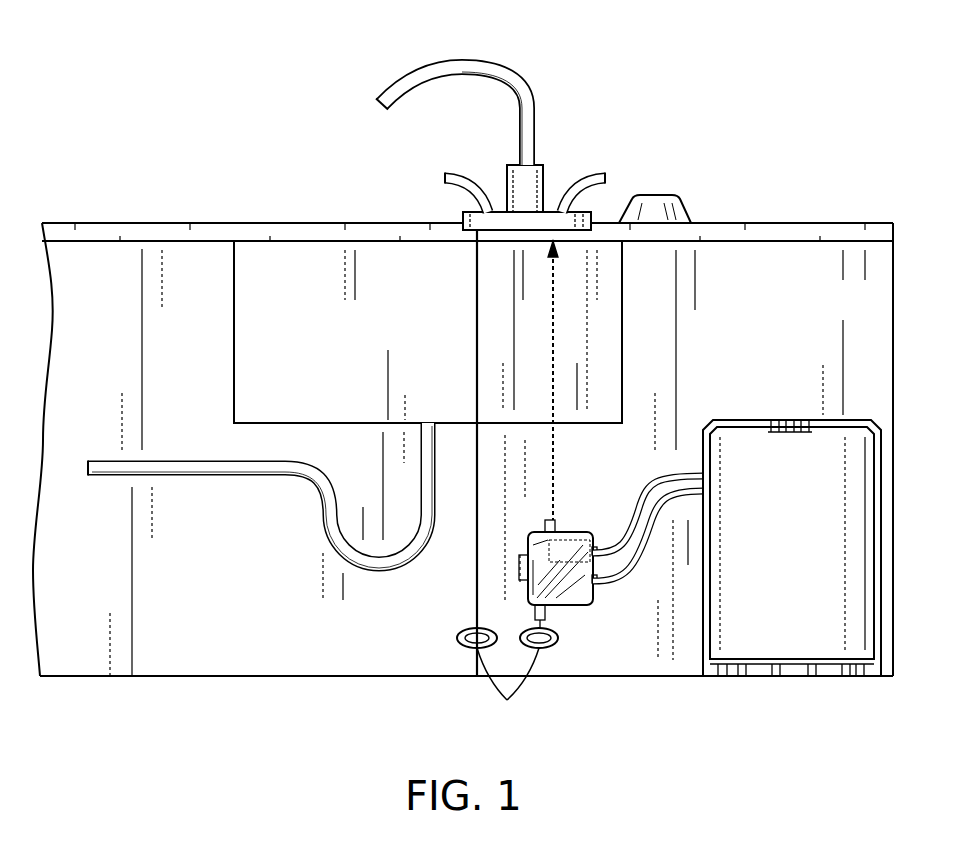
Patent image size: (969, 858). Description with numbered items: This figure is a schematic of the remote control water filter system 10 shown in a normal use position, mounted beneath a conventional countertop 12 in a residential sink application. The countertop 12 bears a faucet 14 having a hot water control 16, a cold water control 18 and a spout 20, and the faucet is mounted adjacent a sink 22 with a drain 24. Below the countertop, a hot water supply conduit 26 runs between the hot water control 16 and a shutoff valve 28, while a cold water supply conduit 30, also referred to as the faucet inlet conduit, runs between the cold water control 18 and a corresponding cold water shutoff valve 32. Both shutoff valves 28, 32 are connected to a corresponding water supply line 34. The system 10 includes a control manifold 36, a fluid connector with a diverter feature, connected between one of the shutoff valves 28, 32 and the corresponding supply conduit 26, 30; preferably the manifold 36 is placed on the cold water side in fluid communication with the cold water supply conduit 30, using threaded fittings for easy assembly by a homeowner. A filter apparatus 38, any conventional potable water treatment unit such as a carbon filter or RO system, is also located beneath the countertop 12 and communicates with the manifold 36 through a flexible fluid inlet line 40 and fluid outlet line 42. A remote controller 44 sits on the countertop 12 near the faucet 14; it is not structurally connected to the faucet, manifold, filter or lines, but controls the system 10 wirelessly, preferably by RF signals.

The remote control water filter system 10 is at (798, 163).
The countertop 12 is at (343, 222).
The faucet 14 is at (548, 165).
The hot water control 16 is at (450, 173).
The cold water control 18 is at (600, 173).
The spout 20 is at (390, 94).
The sink 22 is at (234, 336).
The drain 24 is at (222, 477).
The hot water supply conduit 26 is at (477, 300).
The shutoff valve 28 is at (458, 634).
The cold water supply conduit 30 is at (550, 337).
The cold water shutoff valve 32 is at (556, 634).
The water supply line 34 is at (508, 693).
The control manifold 36 is at (568, 538).
The filter apparatus 38 is at (802, 398).
The fluid inlet line 40 is at (640, 558).
The fluid outlet line 42 is at (657, 478).
The remote controller 44 is at (678, 208).